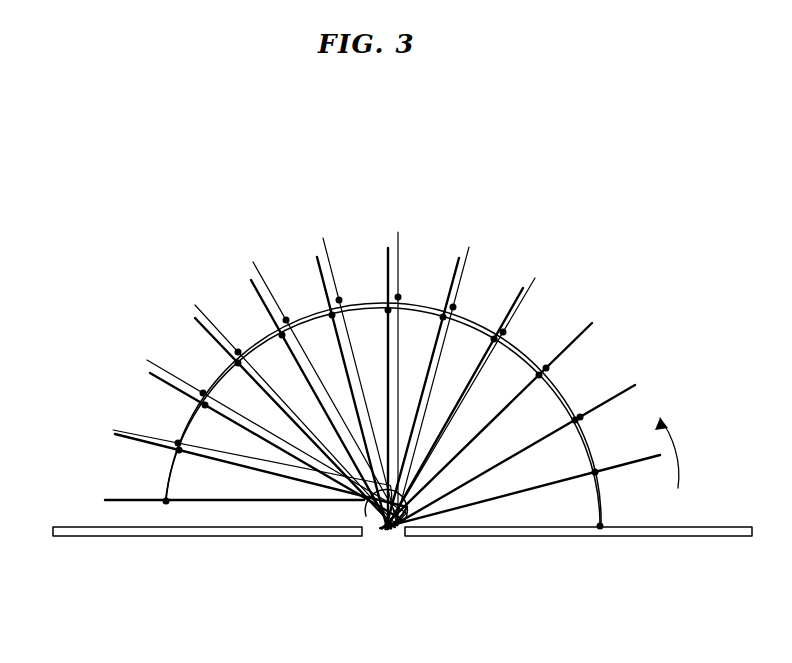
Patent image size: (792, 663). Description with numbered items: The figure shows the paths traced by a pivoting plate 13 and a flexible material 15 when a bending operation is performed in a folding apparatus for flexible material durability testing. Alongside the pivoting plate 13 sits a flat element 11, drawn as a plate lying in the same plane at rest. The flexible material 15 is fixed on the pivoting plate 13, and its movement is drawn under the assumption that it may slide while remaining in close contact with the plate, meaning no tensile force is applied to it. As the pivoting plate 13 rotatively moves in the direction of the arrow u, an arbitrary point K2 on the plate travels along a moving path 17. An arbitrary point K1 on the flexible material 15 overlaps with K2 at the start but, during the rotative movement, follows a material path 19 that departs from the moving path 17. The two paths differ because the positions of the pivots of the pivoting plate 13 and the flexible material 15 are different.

The first body 11 is at (78, 539).
The pivoting plate 13 is at (400, 247).
The flexible material 15 is at (388, 267).
The moving path 17 is at (562, 385).
The material path 19 is at (562, 405).
The arbitrary point on the flexible material K1 is at (200, 400).
The arbitrary point on the pivoting plate K2 is at (205, 392).
The arrow u is at (675, 449).